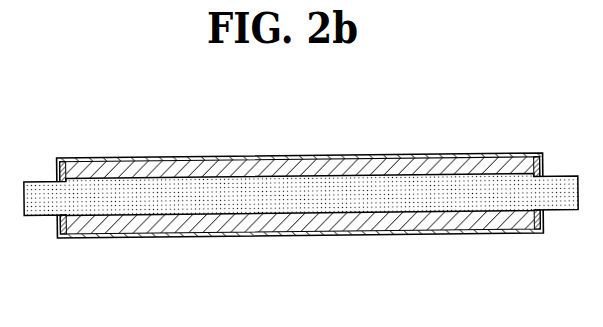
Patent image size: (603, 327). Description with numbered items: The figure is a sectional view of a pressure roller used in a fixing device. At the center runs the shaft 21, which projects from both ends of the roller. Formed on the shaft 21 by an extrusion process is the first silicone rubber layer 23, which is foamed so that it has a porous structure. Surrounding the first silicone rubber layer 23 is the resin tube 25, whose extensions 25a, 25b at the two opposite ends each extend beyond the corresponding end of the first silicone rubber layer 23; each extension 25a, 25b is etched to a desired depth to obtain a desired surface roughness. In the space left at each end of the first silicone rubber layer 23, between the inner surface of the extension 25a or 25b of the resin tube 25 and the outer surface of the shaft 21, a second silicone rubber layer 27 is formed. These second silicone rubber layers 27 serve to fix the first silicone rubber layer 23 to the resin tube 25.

The shaft 21 is at (170, 195).
The first silicone rubber layer 23 is at (262, 170).
The resin tube 25 is at (333, 157).
The extension 25a is at (62, 159).
The extension 25b is at (517, 153).
The second silicone rubber layer 27 is at (54, 174).